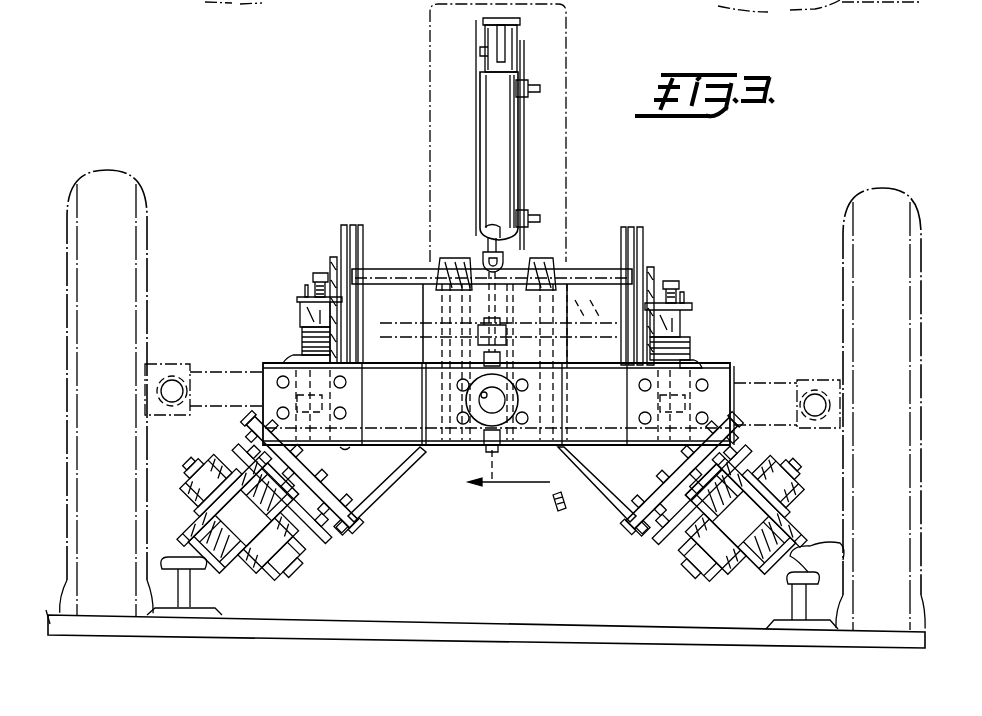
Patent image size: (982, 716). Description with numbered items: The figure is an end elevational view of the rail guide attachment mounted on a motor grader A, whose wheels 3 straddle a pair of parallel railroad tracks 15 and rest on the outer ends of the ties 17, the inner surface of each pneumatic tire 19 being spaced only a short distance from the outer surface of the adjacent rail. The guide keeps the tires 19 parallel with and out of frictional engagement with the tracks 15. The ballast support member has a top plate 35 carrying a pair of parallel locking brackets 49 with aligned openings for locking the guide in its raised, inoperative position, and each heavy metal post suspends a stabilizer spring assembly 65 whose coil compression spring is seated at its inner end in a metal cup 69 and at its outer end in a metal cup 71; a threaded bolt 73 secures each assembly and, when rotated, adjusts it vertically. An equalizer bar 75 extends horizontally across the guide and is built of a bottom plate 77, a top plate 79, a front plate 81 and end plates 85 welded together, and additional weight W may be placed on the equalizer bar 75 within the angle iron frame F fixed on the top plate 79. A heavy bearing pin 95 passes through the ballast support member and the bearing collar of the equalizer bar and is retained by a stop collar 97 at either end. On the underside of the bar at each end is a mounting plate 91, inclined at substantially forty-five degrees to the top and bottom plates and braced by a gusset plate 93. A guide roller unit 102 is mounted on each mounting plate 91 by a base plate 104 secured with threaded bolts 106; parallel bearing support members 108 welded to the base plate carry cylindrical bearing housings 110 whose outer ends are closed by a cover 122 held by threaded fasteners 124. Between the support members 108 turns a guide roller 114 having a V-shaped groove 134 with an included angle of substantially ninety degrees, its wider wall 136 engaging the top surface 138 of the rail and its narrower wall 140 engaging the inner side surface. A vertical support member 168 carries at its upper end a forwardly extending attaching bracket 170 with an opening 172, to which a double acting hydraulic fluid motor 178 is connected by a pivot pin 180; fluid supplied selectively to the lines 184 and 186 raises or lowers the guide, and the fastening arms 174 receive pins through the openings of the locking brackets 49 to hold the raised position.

The wheels 3 is at (104, 168).
The railroad tracks 15 is at (182, 592).
The ties 17 is at (546, 622).
The pneumatic tires 19 is at (147, 232).
The top plate 35 is at (604, 366).
The locking brackets 49 is at (338, 258).
The stabilizer spring assembly 65 is at (302, 338).
The metal cup 69 is at (304, 308).
The metal cup 71 is at (298, 356).
The threaded bolt 73 is at (314, 274).
The equalizer bar 75 is at (598, 432).
The bottom plate 77 is at (346, 447).
The top plate 79 is at (405, 364).
The front plate 81 is at (432, 402).
The end plates 85 is at (258, 364).
The mounting plate 91 is at (348, 518).
The gusset plate 93 is at (396, 466).
The bearing pin 95 is at (498, 450).
The stop collar 97 is at (512, 396).
The guide roller unit 102 is at (204, 456).
The base plate 104 is at (348, 526).
The threaded bolts 106 is at (254, 426).
The bearing support members 108 is at (258, 458).
The cylindrical bearing housing 110 is at (196, 486).
The guide roller 114 is at (255, 578).
The cover 122 is at (198, 468).
The threaded fasteners 124 is at (792, 486).
The V-shaped groove 134 is at (206, 534).
The groove wall 136 is at (208, 568).
The top surface 138 is at (840, 546).
The groove wall 140 is at (682, 532).
The vertical support member 168 is at (485, 19).
The attaching bracket 170 is at (506, 28).
The opening 172 is at (524, 70).
The fastening arm 174 is at (345, 226).
The hydraulic cylinder 178 is at (492, 110).
The pivot pin 180 is at (481, 50).
The fluid line 184 is at (531, 212).
The fluid line 186 is at (531, 92).
The motor grader A is at (426, 56).
The angle iron frame F is at (404, 282).
The additional weight W is at (578, 292).